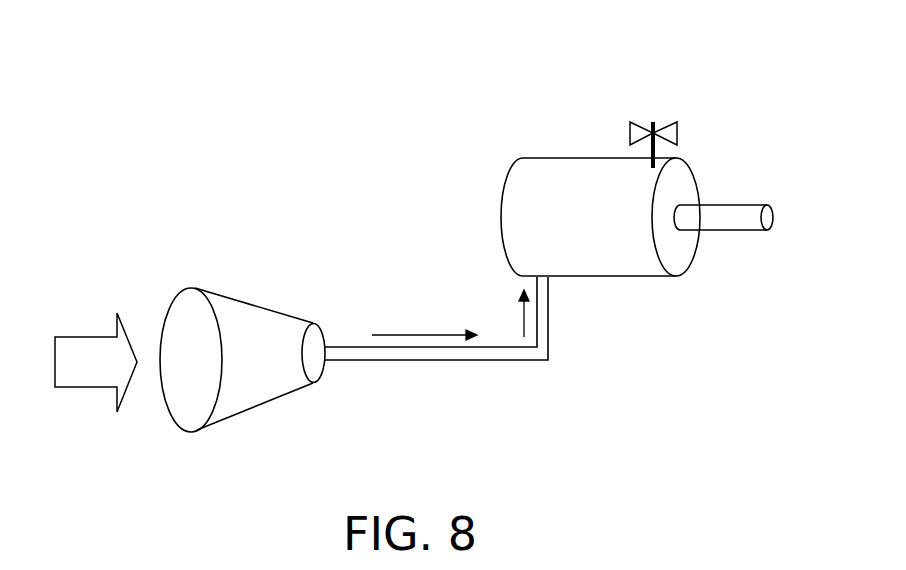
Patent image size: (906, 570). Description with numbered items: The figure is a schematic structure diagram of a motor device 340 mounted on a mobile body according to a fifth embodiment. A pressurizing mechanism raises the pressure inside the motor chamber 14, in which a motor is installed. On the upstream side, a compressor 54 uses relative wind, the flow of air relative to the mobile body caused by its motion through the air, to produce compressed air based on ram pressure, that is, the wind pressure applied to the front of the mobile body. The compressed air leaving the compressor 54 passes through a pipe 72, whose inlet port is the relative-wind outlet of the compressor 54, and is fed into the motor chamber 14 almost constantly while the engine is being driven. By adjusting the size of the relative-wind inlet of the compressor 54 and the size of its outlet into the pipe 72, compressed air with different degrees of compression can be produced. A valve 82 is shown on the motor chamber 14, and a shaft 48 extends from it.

The motor device 340 is at (448, 81).
The motor chamber 14 is at (547, 158).
The valve 82 is at (677, 133).
The output shaft 48 is at (750, 230).
The compressor 54 is at (267, 408).
The pipe 72 is at (550, 337).